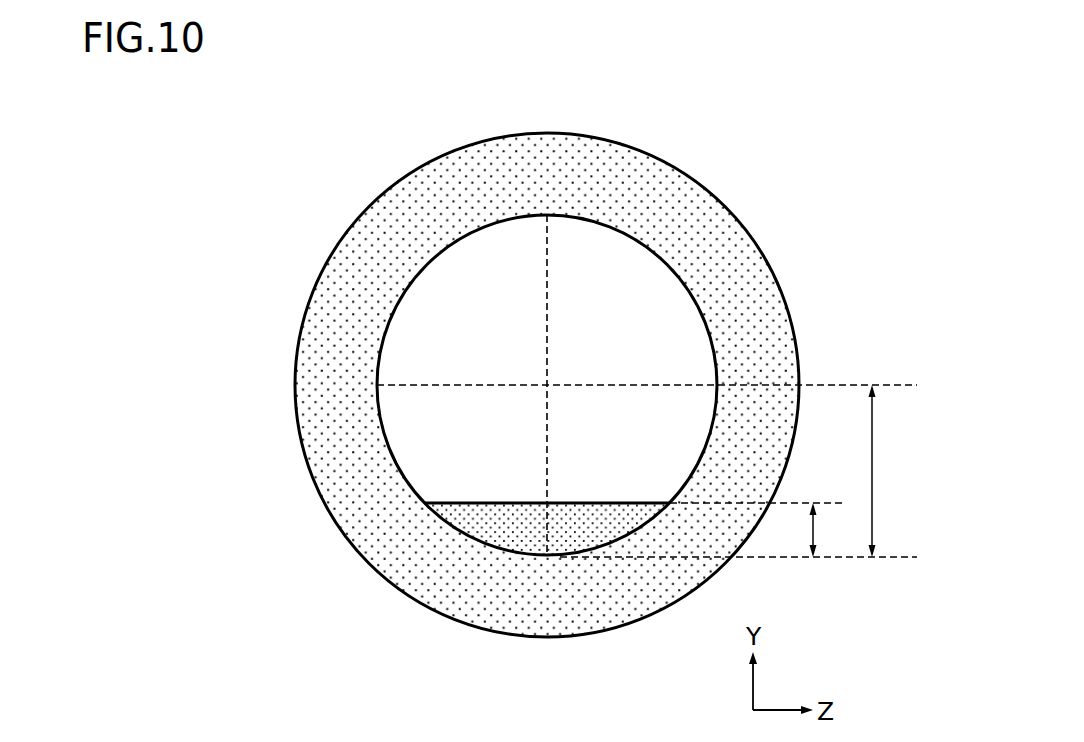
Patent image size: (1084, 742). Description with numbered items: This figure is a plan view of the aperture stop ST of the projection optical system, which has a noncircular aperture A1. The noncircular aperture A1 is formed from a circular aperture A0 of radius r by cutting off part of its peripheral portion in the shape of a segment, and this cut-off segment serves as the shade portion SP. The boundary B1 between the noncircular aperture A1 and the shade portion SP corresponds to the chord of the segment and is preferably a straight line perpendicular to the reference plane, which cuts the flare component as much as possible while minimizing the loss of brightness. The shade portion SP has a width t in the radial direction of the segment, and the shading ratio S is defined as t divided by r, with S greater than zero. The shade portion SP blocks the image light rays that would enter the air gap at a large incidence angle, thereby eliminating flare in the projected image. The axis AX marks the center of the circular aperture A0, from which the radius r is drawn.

The aperture stop ST is at (527, 615).
The shade portion SP is at (473, 533).
The circular aperture A0 is at (378, 408).
The noncircular aperture A1 is at (420, 432).
The boundary B1 is at (463, 502).
The central axis AX is at (547, 385).
The radius of the circular aperture r is at (738, 471).
The width of the shade portion t is at (822, 530).